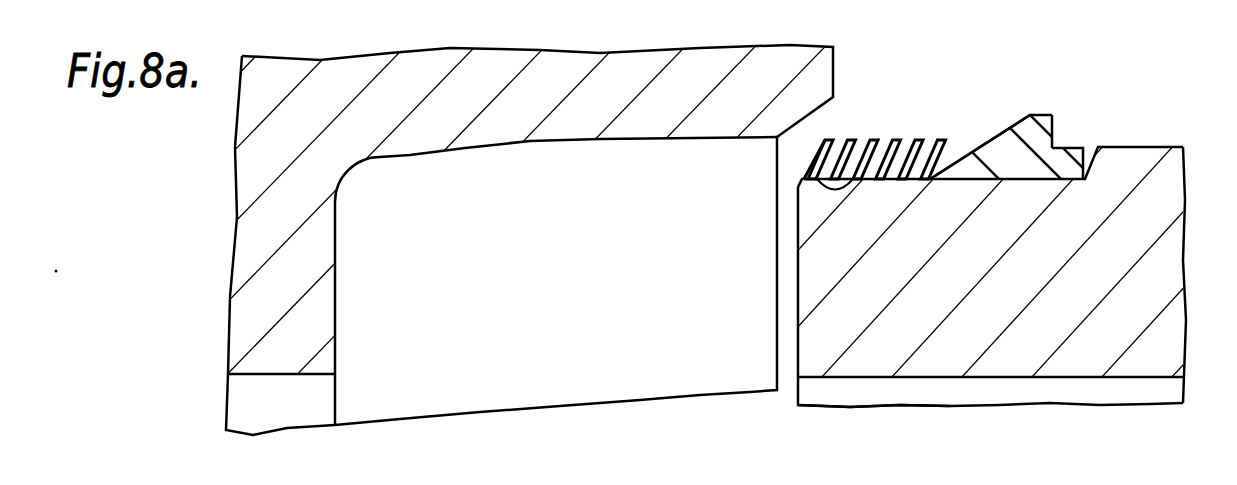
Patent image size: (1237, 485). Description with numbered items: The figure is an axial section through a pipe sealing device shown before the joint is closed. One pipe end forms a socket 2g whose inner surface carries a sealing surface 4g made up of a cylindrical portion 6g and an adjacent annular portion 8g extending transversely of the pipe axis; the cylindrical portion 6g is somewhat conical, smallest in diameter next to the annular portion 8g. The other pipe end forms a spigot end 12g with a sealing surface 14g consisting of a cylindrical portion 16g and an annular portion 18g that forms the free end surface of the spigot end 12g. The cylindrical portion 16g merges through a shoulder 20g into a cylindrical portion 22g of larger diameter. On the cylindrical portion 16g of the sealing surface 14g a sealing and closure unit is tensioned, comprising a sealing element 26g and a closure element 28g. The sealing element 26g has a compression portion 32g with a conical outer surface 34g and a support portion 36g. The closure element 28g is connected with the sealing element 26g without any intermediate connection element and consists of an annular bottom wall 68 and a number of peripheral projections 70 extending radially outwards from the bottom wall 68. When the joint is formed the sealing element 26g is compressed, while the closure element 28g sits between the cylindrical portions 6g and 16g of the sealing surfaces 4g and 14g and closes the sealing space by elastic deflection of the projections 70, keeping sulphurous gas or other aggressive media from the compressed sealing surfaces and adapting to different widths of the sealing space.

The socket 2g is at (497, 108).
The sealing surface 4g is at (337, 208).
The cylindrical portion 6g is at (572, 139).
The annular portion 8g is at (337, 333).
The spigot end 12g is at (1147, 365).
The sealing surface 14g is at (797, 277).
The cylindrical portion 16g is at (996, 174).
The annular portion 18g is at (798, 362).
The shoulder 20g is at (1091, 149).
The cylindrical portion 22g is at (1168, 146).
The sealing element 26g is at (967, 153).
The closure element 28g is at (898, 140).
The compression portion 32g is at (1048, 115).
The conical outer surface 34g is at (1030, 114).
The support portion 36g is at (1067, 149).
The annular bottom wall 68 is at (865, 192).
The peripheral projections 70 is at (838, 140).